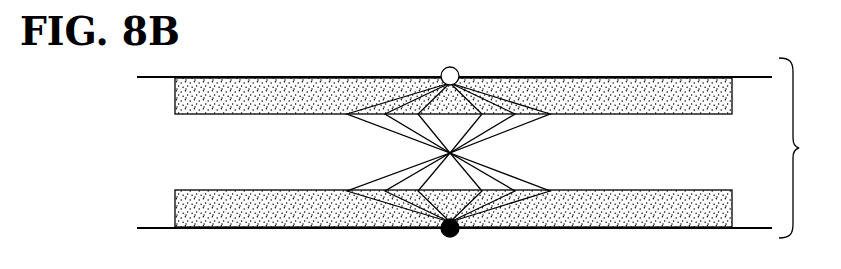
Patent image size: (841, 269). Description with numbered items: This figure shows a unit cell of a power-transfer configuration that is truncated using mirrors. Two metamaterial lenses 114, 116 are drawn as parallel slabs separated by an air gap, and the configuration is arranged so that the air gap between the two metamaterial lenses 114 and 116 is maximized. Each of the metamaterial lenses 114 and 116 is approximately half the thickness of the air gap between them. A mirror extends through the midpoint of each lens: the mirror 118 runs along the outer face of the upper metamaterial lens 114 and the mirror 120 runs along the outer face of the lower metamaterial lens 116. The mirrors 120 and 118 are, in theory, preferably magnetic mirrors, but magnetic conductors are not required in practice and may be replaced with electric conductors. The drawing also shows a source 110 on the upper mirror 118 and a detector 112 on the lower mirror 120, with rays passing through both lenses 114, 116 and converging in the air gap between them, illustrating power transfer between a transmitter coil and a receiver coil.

The light source 110 is at (453, 67).
The detector 112 is at (454, 236).
The metamaterial lens 114 is at (587, 93).
The metamaterial lens 116 is at (629, 208).
The mirror 118 is at (248, 77).
The mirror 120 is at (157, 228).